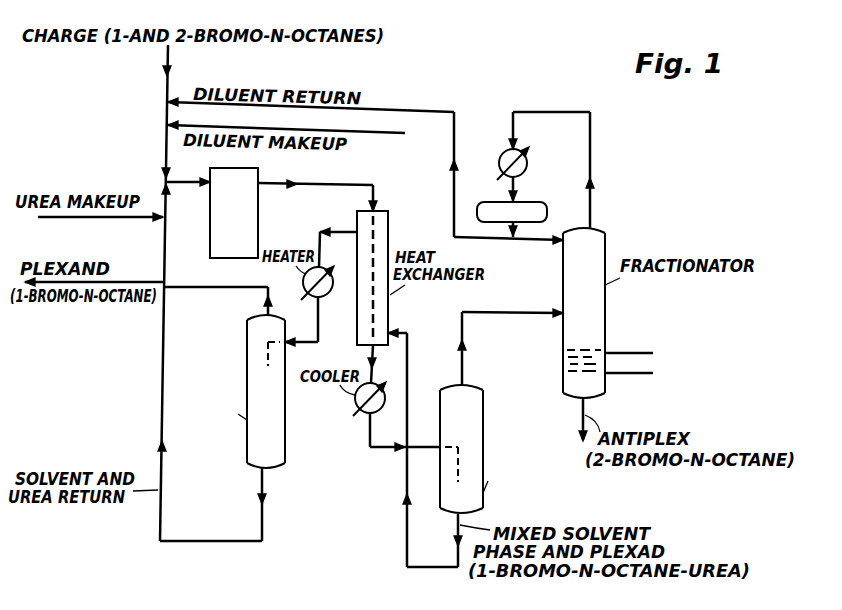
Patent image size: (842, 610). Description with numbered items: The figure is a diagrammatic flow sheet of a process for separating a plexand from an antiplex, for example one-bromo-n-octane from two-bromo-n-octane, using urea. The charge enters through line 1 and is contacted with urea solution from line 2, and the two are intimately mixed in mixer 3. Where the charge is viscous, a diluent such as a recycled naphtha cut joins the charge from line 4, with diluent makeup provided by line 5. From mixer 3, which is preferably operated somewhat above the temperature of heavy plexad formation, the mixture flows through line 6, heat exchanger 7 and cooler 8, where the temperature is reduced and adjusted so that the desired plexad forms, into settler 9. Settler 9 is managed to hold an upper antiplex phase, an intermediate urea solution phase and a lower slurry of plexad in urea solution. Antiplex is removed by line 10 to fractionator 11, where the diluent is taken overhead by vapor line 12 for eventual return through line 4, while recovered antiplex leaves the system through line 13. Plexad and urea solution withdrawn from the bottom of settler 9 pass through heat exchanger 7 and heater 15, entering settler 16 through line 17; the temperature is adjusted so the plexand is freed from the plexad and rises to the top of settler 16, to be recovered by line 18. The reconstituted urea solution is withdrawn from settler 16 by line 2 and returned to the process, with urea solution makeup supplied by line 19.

The line 1 is at (164, 157).
The line 2 is at (166, 204).
The mixer 3 is at (234, 213).
The line 4 is at (434, 110).
The line 5 is at (387, 137).
The line 6 is at (350, 183).
The heat exchanger 7 is at (390, 226).
The cooler 8 is at (372, 408).
The settler 9 is at (473, 420).
The line 10 is at (512, 316).
The fractionator 11 is at (455, 553).
The vapor line 12 is at (592, 157).
The line 13 is at (582, 415).
The heater 15 is at (324, 290).
The settler 16 is at (226, 391).
The line 17 is at (319, 330).
The line 18 is at (195, 290).
The line 19 is at (122, 221).